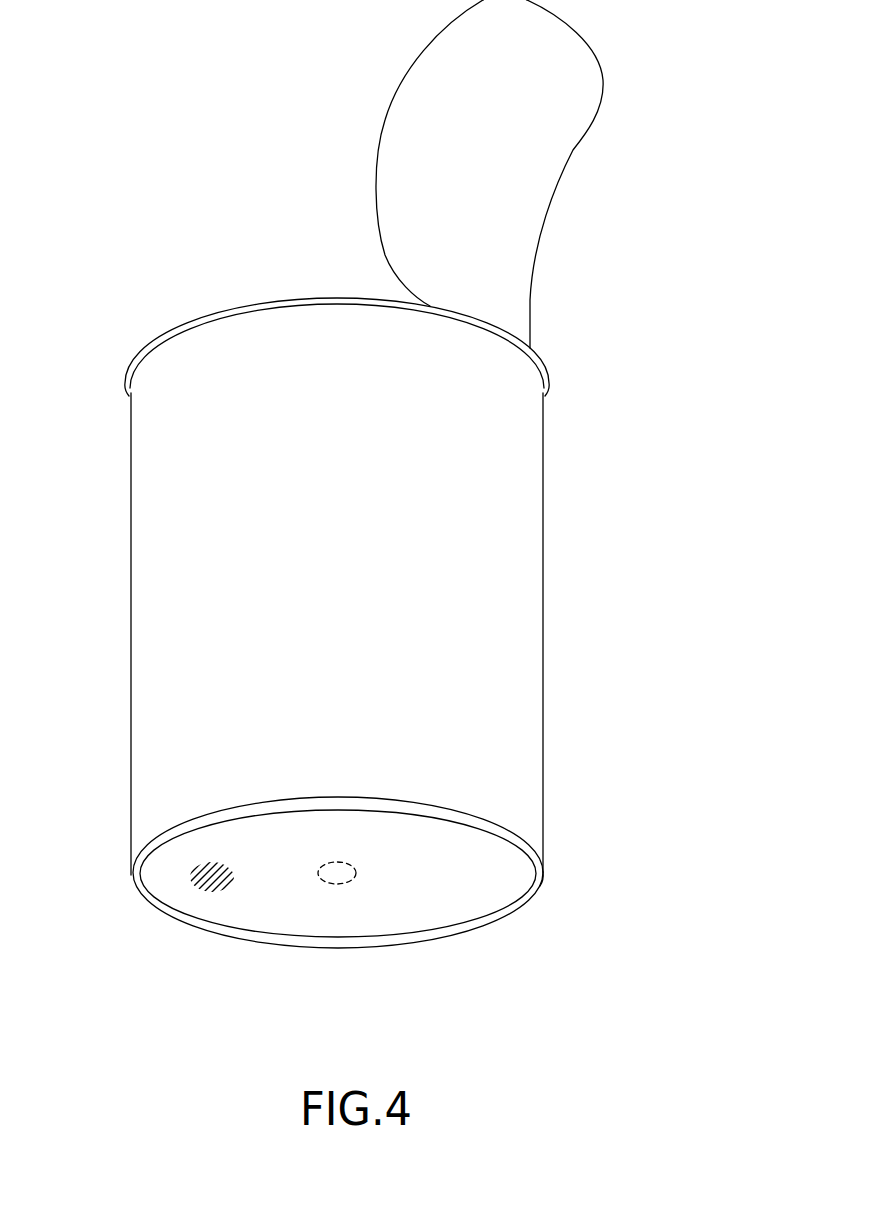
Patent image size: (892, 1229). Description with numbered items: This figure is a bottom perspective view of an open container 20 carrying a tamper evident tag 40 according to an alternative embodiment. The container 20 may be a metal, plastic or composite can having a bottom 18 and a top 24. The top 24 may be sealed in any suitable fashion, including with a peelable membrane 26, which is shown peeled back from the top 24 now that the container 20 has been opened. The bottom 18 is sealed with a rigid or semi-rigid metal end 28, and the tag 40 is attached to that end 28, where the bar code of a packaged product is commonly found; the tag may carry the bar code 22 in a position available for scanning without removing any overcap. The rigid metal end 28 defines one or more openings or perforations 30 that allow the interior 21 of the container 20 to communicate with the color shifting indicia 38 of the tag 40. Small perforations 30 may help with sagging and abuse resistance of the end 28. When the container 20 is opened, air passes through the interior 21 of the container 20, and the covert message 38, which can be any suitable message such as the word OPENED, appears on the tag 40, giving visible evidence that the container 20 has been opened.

The bottom 18 is at (131, 887).
The container 20 is at (131, 627).
The interior 21 is at (298, 252).
The bar code 22 is at (200, 891).
The top 24 is at (231, 308).
The peelable membrane 26 is at (573, 146).
The rigid metal end 28 is at (540, 886).
The perforations 30 is at (338, 879).
The color shifting indicia 38 is at (465, 880).
The tamper evident tag 40 is at (423, 903).